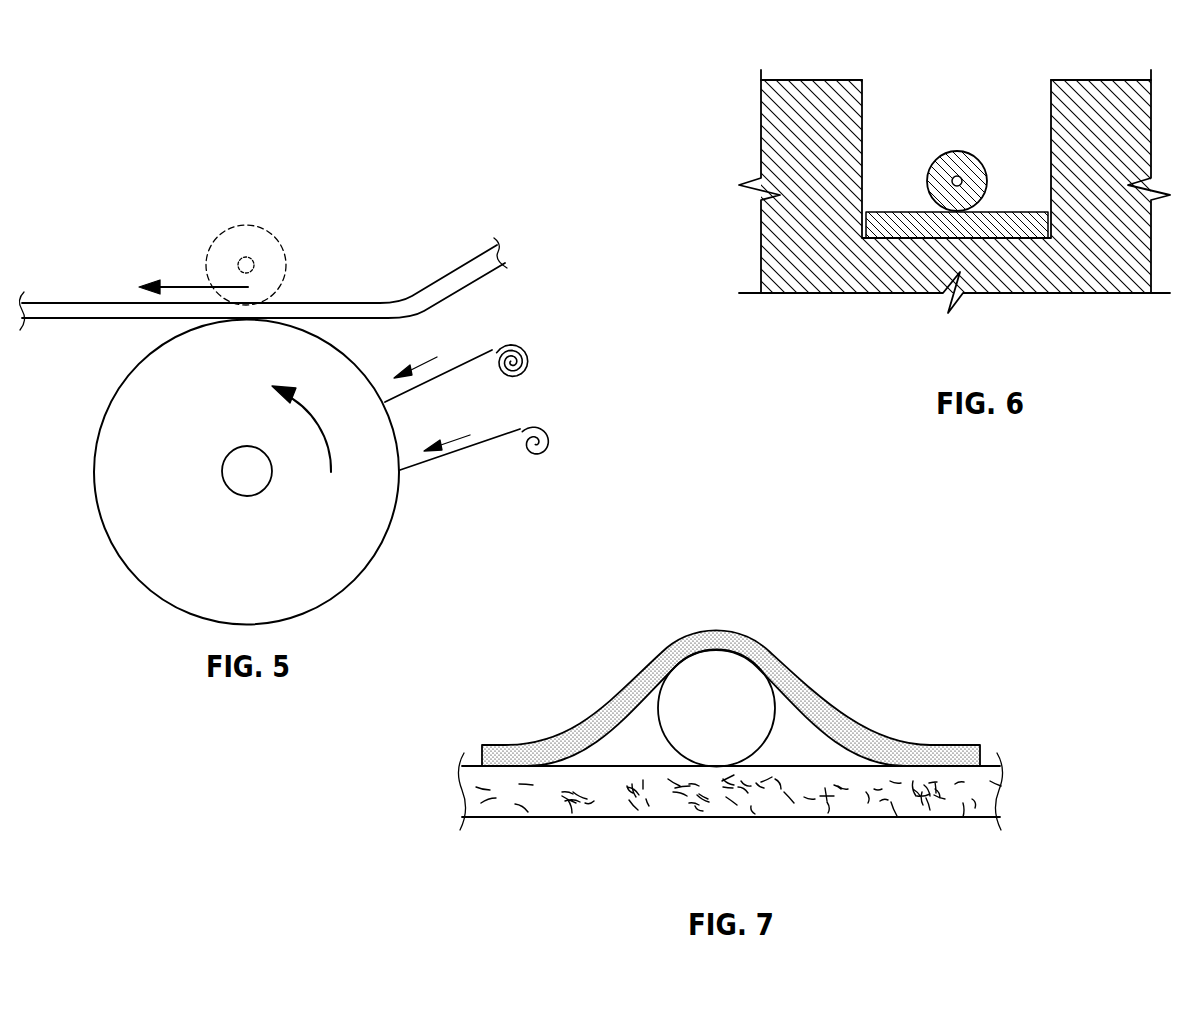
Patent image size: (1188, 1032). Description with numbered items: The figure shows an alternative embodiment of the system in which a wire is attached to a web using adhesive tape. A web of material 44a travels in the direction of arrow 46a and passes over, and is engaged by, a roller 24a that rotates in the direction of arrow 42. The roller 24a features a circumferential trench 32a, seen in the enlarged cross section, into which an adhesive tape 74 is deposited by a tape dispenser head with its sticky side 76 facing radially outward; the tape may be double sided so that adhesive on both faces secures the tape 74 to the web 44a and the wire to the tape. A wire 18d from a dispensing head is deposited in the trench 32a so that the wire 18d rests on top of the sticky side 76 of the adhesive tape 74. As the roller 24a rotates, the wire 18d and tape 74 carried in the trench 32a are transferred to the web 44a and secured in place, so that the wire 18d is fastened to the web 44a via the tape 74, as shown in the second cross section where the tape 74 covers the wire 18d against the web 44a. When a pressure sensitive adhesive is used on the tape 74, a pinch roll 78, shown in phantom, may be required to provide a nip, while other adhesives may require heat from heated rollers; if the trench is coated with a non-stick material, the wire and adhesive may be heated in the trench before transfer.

In FIG. 5, the roller 24a is at (246, 472).
In FIG. 6, the roller 24a is at (812, 80).
In FIG. 5, the arrow 42 is at (300, 413).
In FIG. 5, the web of material 44a is at (335, 303).
In FIG. 7, the web of material 44a is at (810, 817).
In FIG. 5, the arrow 46a is at (185, 287).
In FIG. 5, the pinch roll 78 is at (247, 225).
In FIG. 5, the wire 18d is at (490, 347).
In FIG. 6, the wire 18d is at (960, 152).
In FIG. 7, the wire 18d is at (716, 708).
In FIG. 5, the adhesive tape 74 is at (508, 425).
In FIG. 6, the adhesive tape 74 is at (1020, 240).
In FIG. 7, the adhesive tape 74 is at (806, 654).
In FIG. 6, the sticky side 76 is at (883, 212).
In FIG. 7, the sticky side 76 is at (610, 713).
In FIG. 6, the trench 32a is at (1050, 127).